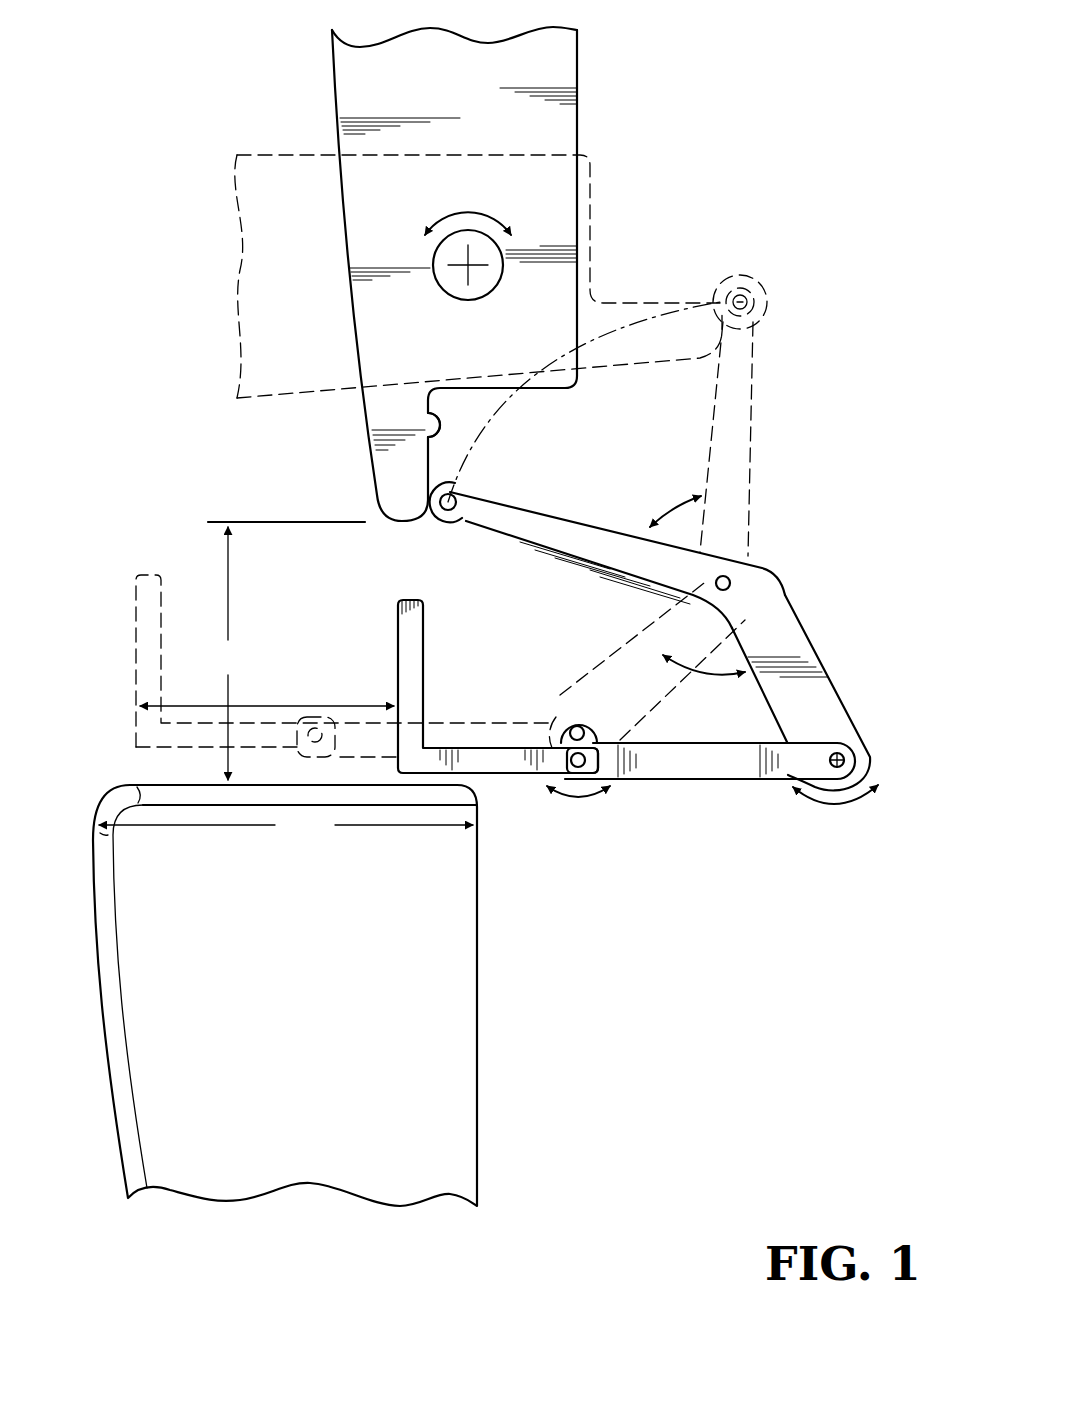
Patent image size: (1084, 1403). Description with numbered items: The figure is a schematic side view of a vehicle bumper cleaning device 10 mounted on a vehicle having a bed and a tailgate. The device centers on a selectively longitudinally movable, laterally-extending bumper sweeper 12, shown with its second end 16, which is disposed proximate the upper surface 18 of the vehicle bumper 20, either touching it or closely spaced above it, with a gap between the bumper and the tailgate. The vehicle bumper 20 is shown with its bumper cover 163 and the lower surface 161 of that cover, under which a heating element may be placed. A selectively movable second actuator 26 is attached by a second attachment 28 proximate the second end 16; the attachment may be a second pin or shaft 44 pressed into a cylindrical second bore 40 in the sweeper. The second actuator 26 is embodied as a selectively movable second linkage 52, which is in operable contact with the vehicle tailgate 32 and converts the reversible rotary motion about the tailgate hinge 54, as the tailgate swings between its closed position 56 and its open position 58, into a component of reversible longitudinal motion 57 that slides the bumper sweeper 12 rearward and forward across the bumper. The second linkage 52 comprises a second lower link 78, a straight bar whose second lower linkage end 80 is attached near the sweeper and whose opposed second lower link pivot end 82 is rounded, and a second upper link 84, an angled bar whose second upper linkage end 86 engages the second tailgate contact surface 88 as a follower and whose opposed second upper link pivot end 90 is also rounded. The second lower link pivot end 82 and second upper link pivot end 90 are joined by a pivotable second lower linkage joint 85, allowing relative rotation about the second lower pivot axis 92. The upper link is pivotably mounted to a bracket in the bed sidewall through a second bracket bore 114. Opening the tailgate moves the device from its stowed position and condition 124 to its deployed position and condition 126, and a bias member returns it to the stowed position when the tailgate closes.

The vehicle bumper cleaning device 10 is at (812, 405).
The bumper sweeper 12 is at (498, 675).
The second end 16 is at (424, 683).
The upper surface 18 is at (155, 785).
The vehicle bumper 20 is at (306, 966).
The second actuator 26 is at (715, 648).
The second attachment 28 is at (645, 787).
The vehicle tailgate 32 is at (449, 274).
The second bore 40 is at (578, 766).
The second pin or shaft 44 is at (594, 772).
The second linkage 52 is at (801, 608).
The tailgate hinge 54 is at (503, 277).
The closed position 56 is at (578, 62).
The reversible longitudinal motion 57 is at (328, 705).
The open position 58 is at (285, 148).
The second lower link 78 is at (679, 737).
The second lower linkage end 80 is at (600, 740).
The second lower link pivot end 82 is at (840, 737).
The second upper link 84 is at (577, 516).
The second lower linkage joint 85 is at (870, 765).
The second upper linkage end 86 is at (470, 493).
The second tailgate contact surface 88 is at (428, 413).
The second upper link pivot end 90 is at (873, 760).
The second lower pivot axis 92 is at (790, 775).
The second bracket bore 114 is at (730, 565).
The stowed position and condition 124 is at (498, 675).
The deployed position and condition 126 is at (138, 568).
The lower surface 161 is at (210, 808).
The bumper cover 163 is at (107, 925).